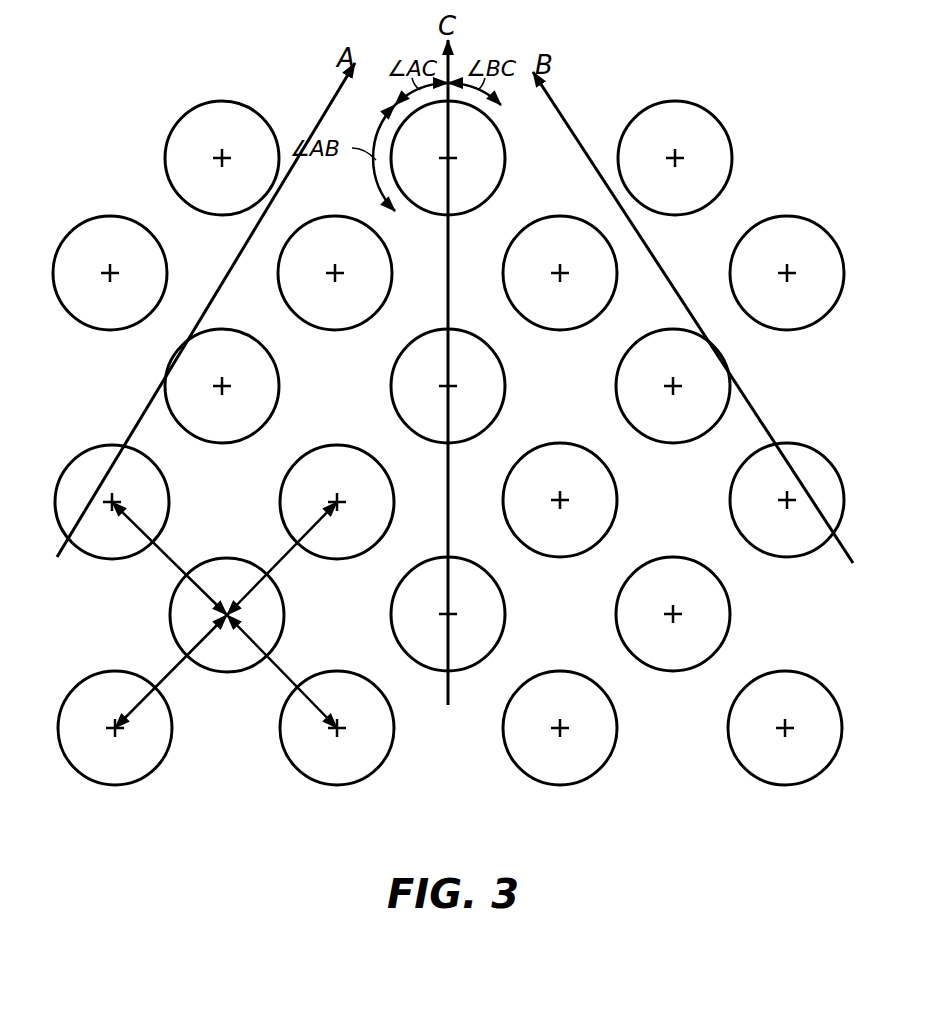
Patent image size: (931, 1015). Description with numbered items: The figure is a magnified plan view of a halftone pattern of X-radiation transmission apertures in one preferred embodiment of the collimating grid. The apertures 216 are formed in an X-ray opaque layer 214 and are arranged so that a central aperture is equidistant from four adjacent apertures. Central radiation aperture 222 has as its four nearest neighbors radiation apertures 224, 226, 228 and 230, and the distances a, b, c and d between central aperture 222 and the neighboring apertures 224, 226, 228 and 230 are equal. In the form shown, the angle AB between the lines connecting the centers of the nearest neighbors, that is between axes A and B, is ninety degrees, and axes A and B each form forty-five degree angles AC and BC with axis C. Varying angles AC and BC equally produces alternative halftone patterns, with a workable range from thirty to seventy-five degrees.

The X-ray opaque layer 214 is at (753, 197).
The apertures 216 is at (178, 138).
The central radiation aperture 222 is at (178, 624).
The radiation aperture 224 is at (95, 455).
The radiation aperture 226 is at (337, 455).
The radiation aperture 228 is at (367, 780).
The radiation aperture 230 is at (117, 783).